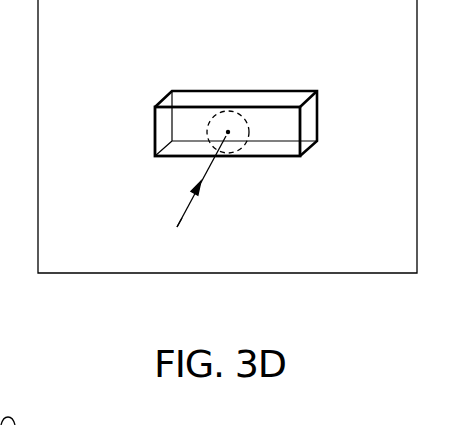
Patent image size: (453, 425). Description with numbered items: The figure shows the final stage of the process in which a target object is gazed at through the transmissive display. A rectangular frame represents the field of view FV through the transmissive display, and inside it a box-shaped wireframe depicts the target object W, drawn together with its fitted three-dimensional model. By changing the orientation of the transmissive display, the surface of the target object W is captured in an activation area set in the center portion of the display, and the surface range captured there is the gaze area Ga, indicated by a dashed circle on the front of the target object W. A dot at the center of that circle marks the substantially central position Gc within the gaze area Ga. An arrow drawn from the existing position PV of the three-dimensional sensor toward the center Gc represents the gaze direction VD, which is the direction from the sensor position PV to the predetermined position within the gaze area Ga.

The target object W is at (198, 89).
The center of the gaze area Gc is at (249, 121).
The gaze area Ga is at (233, 148).
The gaze direction VD is at (183, 212).
The existing position of the three-dimensional sensor PV is at (170, 234).
The field of view FV is at (228, 273).